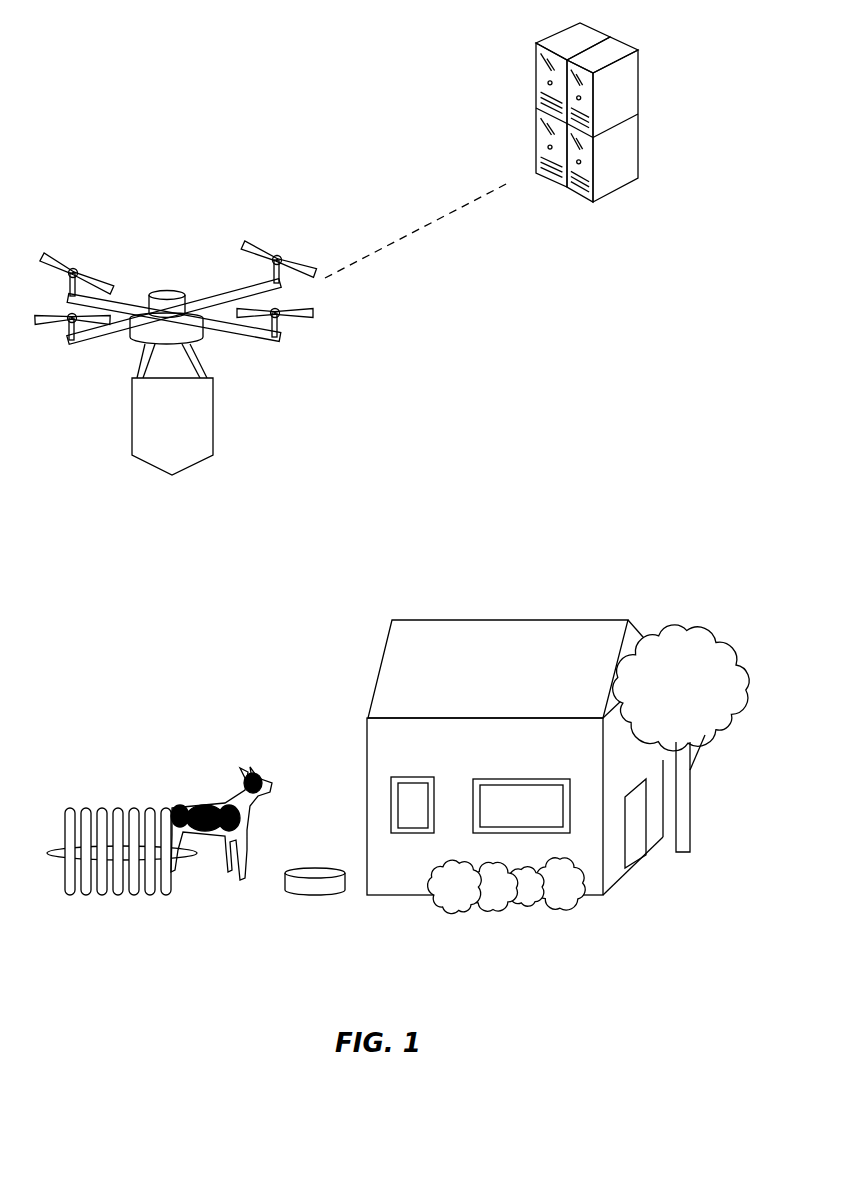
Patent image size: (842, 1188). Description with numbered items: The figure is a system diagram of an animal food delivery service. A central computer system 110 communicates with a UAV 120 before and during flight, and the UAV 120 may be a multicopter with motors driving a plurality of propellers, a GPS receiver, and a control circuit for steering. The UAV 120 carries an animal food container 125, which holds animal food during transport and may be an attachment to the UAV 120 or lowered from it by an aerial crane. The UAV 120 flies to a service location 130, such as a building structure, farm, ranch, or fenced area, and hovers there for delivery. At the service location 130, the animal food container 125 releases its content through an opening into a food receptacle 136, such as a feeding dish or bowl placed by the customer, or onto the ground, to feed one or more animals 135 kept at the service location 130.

The central computer system 110 is at (588, 153).
The UAV 120 is at (172, 288).
The animal food container 125 is at (222, 417).
The service location 130 is at (597, 590).
The animals 135 is at (202, 782).
The food receptacle 136 is at (333, 897).